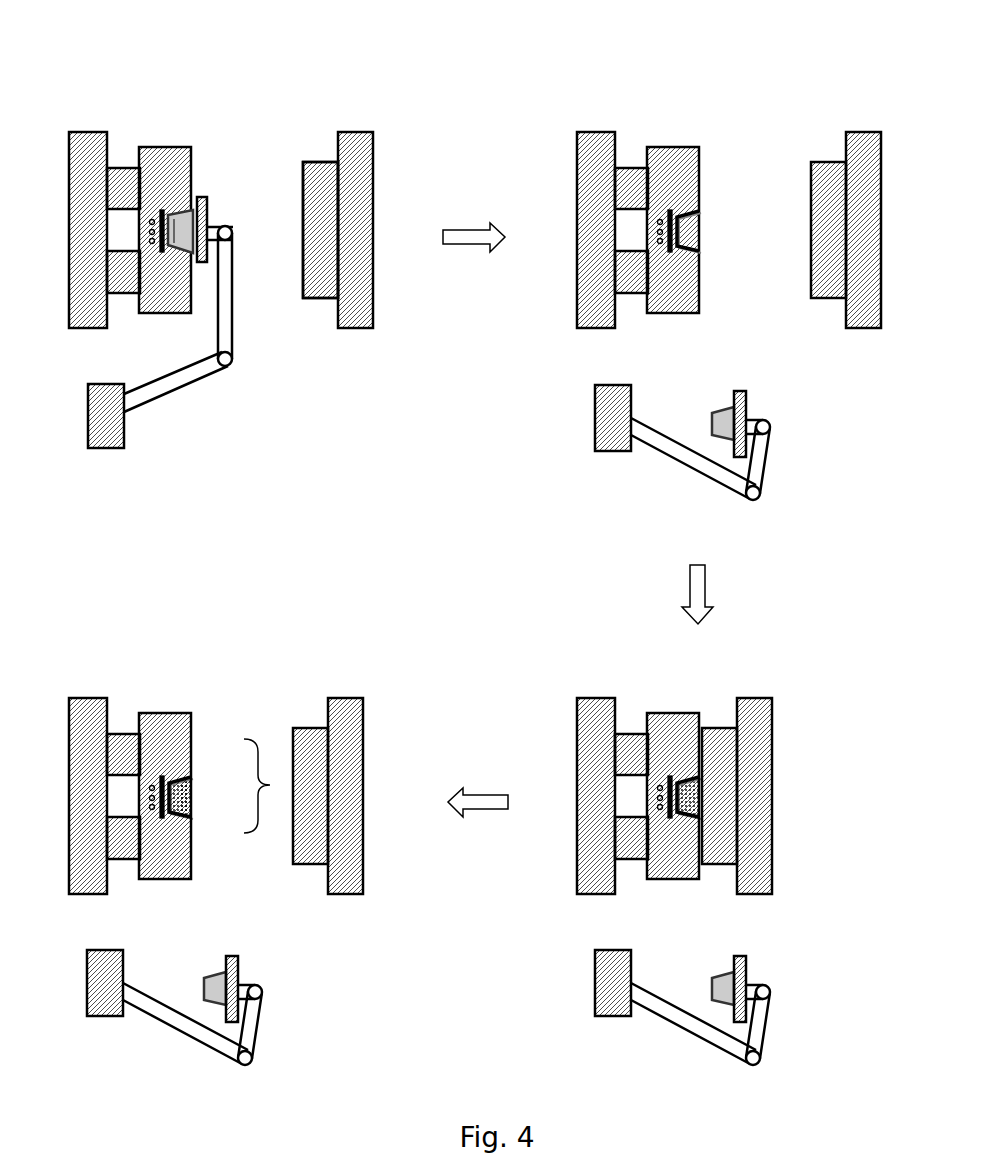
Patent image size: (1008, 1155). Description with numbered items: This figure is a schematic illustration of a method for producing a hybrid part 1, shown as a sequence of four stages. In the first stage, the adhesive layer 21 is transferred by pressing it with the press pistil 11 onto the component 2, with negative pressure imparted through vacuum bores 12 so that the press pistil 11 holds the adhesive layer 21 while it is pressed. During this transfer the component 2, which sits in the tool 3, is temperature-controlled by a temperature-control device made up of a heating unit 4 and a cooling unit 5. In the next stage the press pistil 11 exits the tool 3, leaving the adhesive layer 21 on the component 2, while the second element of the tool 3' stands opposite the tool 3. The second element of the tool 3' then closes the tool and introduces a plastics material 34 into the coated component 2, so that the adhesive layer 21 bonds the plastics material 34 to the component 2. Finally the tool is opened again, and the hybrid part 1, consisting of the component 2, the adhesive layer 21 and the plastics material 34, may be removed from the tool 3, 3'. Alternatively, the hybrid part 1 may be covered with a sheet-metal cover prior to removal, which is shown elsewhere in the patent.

The hybrid part 1 is at (265, 786).
The component 2 is at (168, 213).
The adhesive layer 21 is at (188, 213).
The tool 3 is at (165, 179).
The second element of the tool 3' is at (338, 187).
The heating unit 4 is at (160, 251).
The cooling unit 5 is at (160, 221).
The press pistil 11 is at (203, 197).
The vacuum bores 12 is at (182, 252).
The plastics material 34 is at (204, 803).